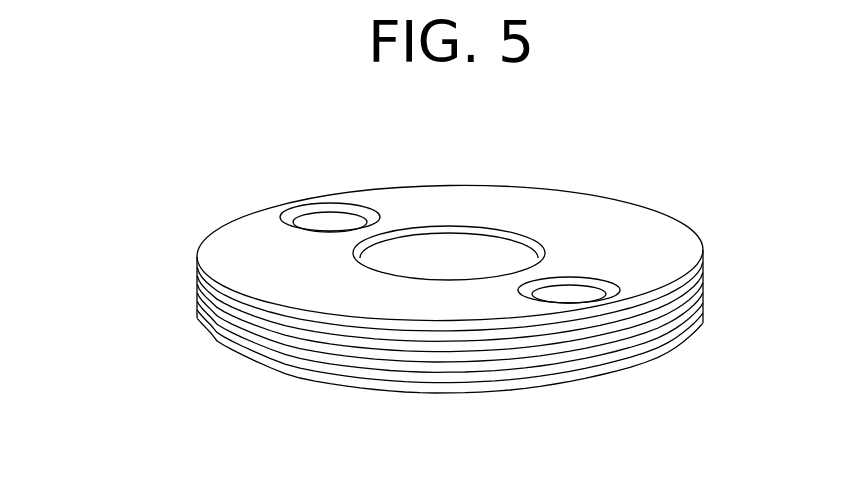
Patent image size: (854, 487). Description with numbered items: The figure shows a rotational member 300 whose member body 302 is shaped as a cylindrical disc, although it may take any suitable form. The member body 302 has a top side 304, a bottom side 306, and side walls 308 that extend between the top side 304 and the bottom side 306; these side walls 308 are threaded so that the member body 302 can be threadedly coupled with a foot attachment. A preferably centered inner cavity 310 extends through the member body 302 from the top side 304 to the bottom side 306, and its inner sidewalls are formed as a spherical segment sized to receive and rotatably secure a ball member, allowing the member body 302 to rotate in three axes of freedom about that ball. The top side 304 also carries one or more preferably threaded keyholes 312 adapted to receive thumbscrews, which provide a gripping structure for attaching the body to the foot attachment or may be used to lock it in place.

The rotational member 300 is at (634, 93).
The member body 302 is at (122, 231).
The top side 304 is at (408, 207).
The bottom side 306 is at (440, 398).
The side walls 308 is at (705, 293).
The inner cavity 310 is at (455, 263).
The keyholes 312 is at (332, 220).